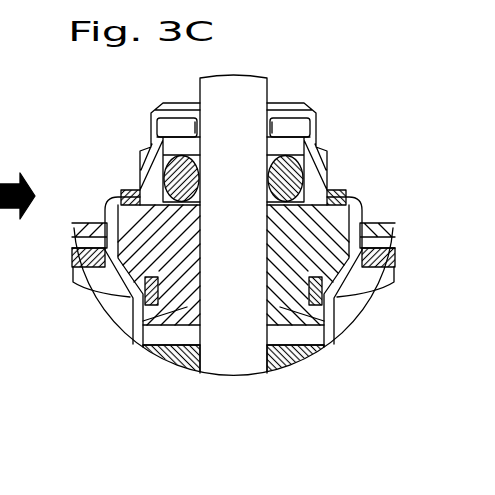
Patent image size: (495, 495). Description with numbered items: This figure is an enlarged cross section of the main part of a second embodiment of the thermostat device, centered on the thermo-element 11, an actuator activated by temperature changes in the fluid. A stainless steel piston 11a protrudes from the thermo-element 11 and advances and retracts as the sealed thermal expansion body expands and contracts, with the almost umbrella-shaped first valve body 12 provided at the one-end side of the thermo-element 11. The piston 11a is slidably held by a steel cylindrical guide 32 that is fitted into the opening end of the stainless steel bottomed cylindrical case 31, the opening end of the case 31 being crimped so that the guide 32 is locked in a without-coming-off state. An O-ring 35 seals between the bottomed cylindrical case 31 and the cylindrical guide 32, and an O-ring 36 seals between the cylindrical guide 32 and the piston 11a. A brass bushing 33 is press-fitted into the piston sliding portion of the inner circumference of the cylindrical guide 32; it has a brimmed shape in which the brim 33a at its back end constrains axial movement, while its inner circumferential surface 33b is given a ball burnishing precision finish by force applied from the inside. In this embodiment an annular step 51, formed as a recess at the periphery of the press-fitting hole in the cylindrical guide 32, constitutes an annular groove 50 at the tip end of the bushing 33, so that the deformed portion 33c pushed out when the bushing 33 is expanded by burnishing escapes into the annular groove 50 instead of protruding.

The thermo-element 11 is at (342, 328).
The piston 11a is at (247, 95).
The first valve body 12 is at (398, 220).
The bottomed cylindrical case 31 is at (133, 346).
The cylindrical guide 32 is at (324, 158).
The brass bushing 33 is at (207, 343).
The brim 33a is at (320, 365).
The inner circumferential surface 33b is at (185, 365).
The deformed portion 33c is at (345, 190).
The O-ring 35 is at (97, 298).
The O-ring 36 is at (163, 176).
The annular groove 50 is at (352, 200).
The annular step 51 is at (181, 213).